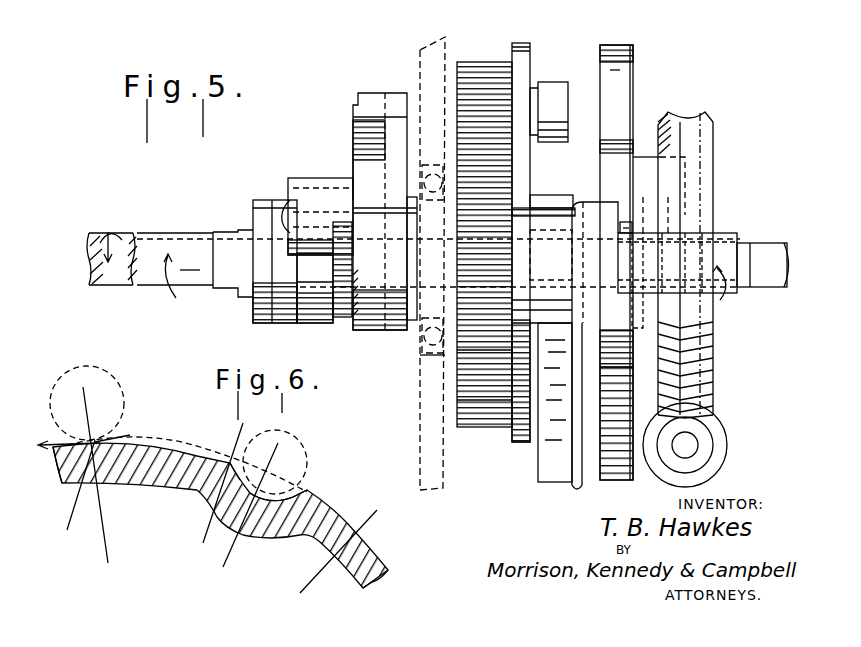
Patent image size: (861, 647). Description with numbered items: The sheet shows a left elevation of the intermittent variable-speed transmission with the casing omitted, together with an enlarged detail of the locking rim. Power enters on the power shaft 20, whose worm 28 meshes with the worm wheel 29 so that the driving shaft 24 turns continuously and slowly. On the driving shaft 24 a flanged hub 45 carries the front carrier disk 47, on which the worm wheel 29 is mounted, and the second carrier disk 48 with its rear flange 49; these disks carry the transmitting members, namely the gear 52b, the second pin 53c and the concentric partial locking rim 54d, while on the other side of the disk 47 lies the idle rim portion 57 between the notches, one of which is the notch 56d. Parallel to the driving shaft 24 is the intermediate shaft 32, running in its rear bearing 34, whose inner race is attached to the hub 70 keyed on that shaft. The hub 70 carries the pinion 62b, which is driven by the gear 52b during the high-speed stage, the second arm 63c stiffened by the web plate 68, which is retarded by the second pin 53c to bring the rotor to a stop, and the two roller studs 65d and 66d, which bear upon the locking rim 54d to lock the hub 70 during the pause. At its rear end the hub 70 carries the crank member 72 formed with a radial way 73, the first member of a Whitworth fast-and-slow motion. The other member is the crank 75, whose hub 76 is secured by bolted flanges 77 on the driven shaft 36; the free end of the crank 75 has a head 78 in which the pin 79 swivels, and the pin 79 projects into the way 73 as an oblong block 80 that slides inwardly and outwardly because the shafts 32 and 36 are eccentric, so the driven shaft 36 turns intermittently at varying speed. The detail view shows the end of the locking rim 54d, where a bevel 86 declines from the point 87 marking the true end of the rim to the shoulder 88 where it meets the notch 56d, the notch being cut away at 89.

In FIG. 5, the power shaft 20 is at (699, 445).
In FIG. 5, the driving shaft 24 is at (780, 237).
In FIG. 5, the worm 28 is at (718, 421).
In FIG. 5, the worm wheel 29 is at (420, 50).
In FIG. 5, the intermediate shaft 32 is at (741, 250).
In FIG. 5, the rear bearing 34 is at (428, 355).
In FIG. 5, the driven shaft 36 is at (196, 233).
In FIG. 5, the flanged hub 45 is at (555, 207).
In FIG. 5, the front carrier disk 47 is at (635, 64).
In FIG. 5, the second carrier disk 48 is at (526, 55).
In FIG. 5, the rear flange 49 is at (490, 420).
In FIG. 5, the gear 52b is at (484, 62).
In FIG. 5, the second pin 53c is at (550, 83).
In FIG. 5, the locking rim 54d is at (618, 45).
In FIG. 6, the locking rim 54d is at (65, 490).
In FIG. 6, the notch 56d is at (272, 530).
In FIG. 6, the idle rim portion 57 is at (378, 588).
In FIG. 5, the pinion 62b is at (478, 350).
In FIG. 5, the second arm 63c is at (576, 468).
In FIG. 5, the stud 65d is at (625, 355).
In FIG. 5, the stud 66d is at (622, 217).
In FIG. 6, the stud 66d is at (107, 372).
In FIG. 5, the web plate 68 is at (547, 457).
In FIG. 5, the hub 70 is at (517, 210).
In FIG. 5, the crank member 72 is at (405, 93).
In FIG. 5, the radial way 73 is at (355, 126).
In FIG. 5, the crank 75 is at (348, 318).
In FIG. 5, the hub 76 is at (322, 312).
In FIG. 5, the bolted flanges 77 is at (281, 325).
In FIG. 5, the head 78 is at (304, 160).
In FIG. 5, the pin 79 is at (288, 212).
In FIG. 5, the oblong block 80 is at (355, 168).
In FIG. 6, the bevel 86 is at (163, 448).
In FIG. 6, the point 87 is at (122, 418).
In FIG. 6, the shoulder 88 is at (231, 463).
In FIG. 6, the cut-away 89 is at (304, 495).